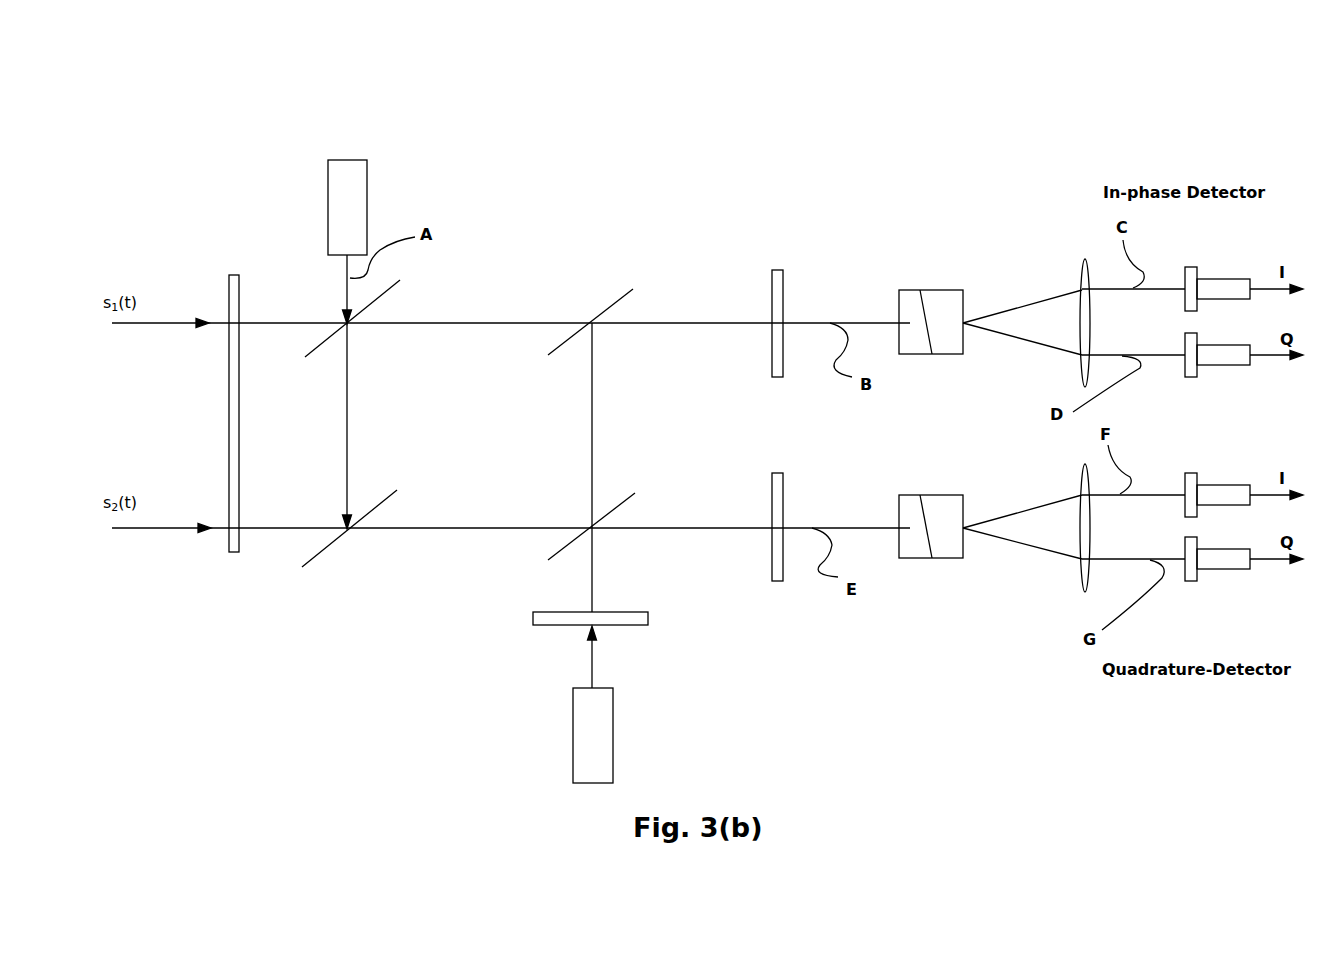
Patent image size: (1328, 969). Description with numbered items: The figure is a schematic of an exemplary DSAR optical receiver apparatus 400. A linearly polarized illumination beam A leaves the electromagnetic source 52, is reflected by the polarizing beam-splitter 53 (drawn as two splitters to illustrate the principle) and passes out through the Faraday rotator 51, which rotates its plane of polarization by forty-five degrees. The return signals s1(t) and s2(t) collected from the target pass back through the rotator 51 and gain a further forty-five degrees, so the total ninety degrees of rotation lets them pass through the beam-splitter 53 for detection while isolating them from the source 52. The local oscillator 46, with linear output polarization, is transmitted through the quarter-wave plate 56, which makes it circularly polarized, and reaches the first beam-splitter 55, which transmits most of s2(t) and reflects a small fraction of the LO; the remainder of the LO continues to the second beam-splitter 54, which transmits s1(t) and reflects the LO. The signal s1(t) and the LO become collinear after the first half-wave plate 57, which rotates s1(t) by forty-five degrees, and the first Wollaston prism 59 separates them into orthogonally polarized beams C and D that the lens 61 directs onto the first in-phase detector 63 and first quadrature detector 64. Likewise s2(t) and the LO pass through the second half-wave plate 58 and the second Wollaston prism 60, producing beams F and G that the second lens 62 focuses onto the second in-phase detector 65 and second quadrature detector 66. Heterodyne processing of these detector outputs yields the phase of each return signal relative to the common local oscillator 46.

The DSAR optical receiver apparatus 400 is at (316, 88).
The electromagnetic source 52 is at (353, 182).
The Faraday rotator 51 is at (240, 373).
The polarizing beam-splitter 53 is at (380, 300).
The second beam-splitter 54 is at (612, 305).
The first beam-splitter 55 is at (618, 505).
The quarter-wave plate 56 is at (533, 615).
The local oscillator 46 is at (593, 715).
The first half-wave plate 57 is at (778, 268).
The second half-wave plate 58 is at (777, 472).
The first Wollaston prism 59 is at (921, 290).
The second Wollaston prism 60 is at (918, 558).
The lens 61 is at (1080, 265).
The second lens 62 is at (1078, 568).
The first in-phase high-speed heterodyne detector 63 is at (1215, 278).
The first quadrature high-speed heterodyne detector 64 is at (1207, 367).
The second in-phase high-speed heterodyne detector 65 is at (1220, 485).
The second quadrature high-speed heterodyne detector 66 is at (1226, 570).